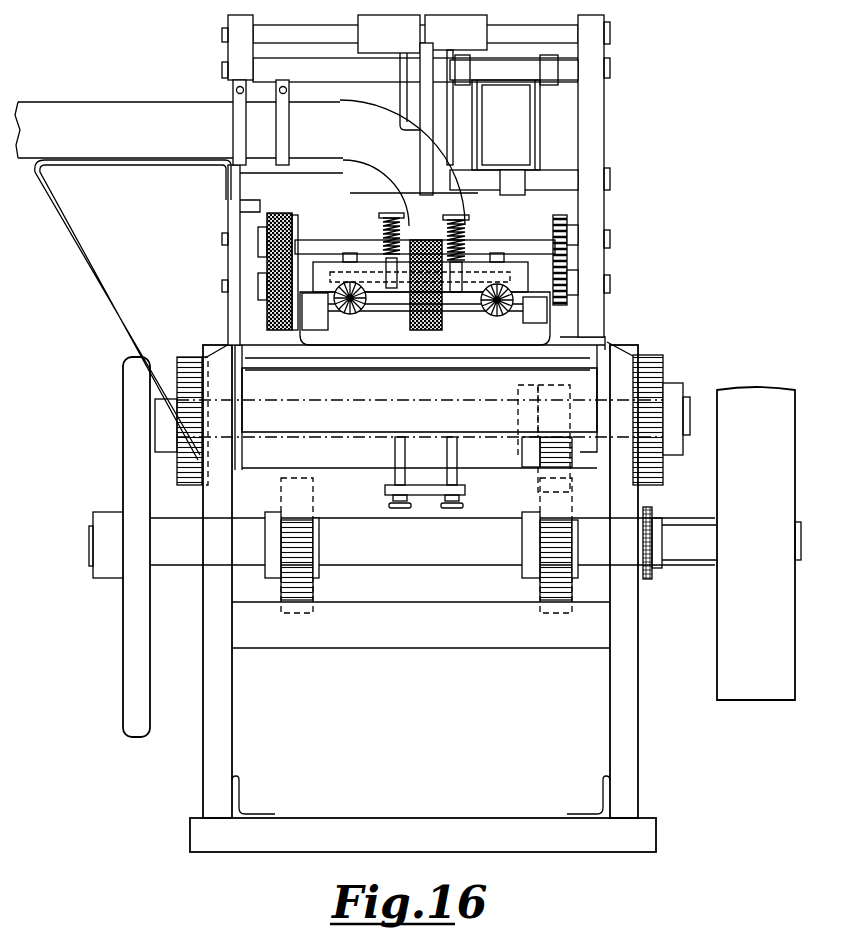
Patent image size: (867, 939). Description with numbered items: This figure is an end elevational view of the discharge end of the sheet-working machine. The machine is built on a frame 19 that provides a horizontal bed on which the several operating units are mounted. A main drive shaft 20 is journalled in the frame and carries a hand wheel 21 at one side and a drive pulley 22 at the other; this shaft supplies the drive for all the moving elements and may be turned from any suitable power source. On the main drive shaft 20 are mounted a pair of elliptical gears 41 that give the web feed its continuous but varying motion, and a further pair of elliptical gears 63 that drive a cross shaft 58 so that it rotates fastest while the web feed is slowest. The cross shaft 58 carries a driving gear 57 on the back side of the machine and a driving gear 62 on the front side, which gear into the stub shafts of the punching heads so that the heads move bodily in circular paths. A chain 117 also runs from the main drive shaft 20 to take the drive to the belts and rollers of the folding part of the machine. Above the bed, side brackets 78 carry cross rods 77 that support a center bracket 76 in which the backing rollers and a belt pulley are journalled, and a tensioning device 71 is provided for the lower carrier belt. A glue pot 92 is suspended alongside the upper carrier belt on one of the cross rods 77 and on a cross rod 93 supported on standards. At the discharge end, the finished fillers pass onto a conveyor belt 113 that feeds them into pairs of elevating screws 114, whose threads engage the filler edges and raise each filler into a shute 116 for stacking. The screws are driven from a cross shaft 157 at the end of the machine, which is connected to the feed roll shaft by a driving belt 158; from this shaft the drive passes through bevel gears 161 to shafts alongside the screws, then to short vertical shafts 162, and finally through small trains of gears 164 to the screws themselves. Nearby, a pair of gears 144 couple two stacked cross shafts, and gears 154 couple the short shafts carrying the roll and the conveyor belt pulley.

The frame 19 is at (227, 705).
The main drive shaft 20 is at (430, 554).
The hand wheel 21 is at (132, 639).
The drive pulley 22 is at (748, 690).
The elliptical gears 41 is at (302, 584).
The driving gear 57 is at (668, 340).
The cross shaft 58 is at (689, 408).
The driving gear 62 is at (191, 360).
The elliptical gears 63 is at (556, 456).
The tensioning device 71 is at (466, 488).
The center bracket 76 is at (413, 95).
The cross rods 77 is at (304, 22).
The side brackets 78 is at (606, 112).
The pot 92 is at (520, 149).
The cross rod 93 is at (497, 70).
The conveyor belt 113 is at (437, 325).
The elevating screws 114 is at (453, 223).
The shute 116 is at (358, 158).
The chain 117 is at (650, 574).
The gears 144 is at (268, 290).
The gears 154 is at (570, 272).
The cross shaft 157 is at (465, 313).
The driving belt 158 is at (277, 213).
The bevel gears 161 is at (349, 315).
The vertical shafts 162 is at (345, 258).
The trains of gears 164 is at (395, 282).